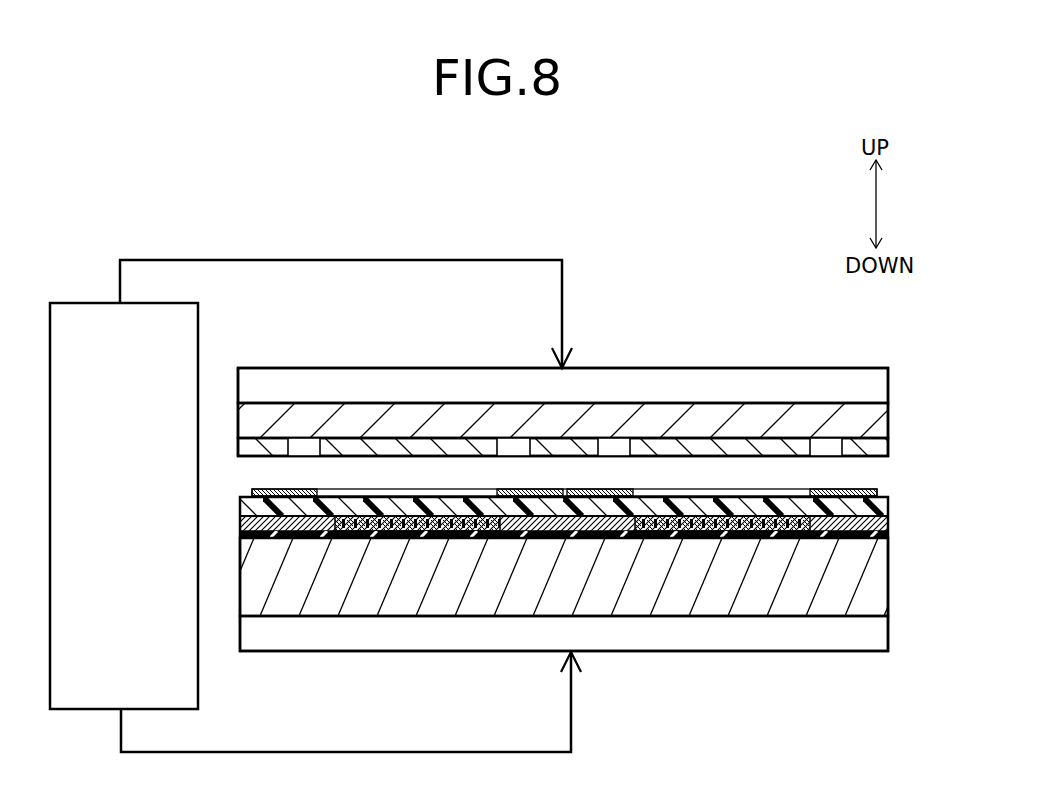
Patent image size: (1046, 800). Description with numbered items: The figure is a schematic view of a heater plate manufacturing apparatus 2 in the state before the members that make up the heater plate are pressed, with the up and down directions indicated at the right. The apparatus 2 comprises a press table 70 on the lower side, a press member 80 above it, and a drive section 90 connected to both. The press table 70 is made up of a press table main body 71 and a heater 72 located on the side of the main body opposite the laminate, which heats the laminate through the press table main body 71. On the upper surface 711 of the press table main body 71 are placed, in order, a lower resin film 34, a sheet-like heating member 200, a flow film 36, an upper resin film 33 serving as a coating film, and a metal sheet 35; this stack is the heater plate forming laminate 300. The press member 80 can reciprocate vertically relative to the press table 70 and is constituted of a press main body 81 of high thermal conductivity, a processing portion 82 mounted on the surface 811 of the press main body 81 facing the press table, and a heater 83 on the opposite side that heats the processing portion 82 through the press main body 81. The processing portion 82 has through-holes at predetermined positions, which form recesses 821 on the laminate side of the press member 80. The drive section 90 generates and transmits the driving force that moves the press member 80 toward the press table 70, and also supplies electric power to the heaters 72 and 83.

The heater plate manufacturing apparatus 2 is at (682, 268).
The drive section 90 is at (88, 350).
The press member 80 is at (836, 362).
The heater 83 is at (845, 385).
The press main body 81 is at (845, 420).
The surface 811 is at (738, 440).
The processing portion 82 is at (848, 452).
The recesses 821 is at (305, 450).
The press table 70 is at (849, 655).
The press table main body 71 is at (850, 596).
The upper surface 711 is at (722, 540).
The heater 72 is at (850, 634).
The upper resin film 33 is at (885, 498).
The lower resin film 34 is at (850, 537).
The metal sheet 35 is at (812, 491).
The flow film 36 is at (858, 518).
The sheet-like heating member 200 is at (240, 530).
The heater plate forming laminate 300 is at (228, 510).